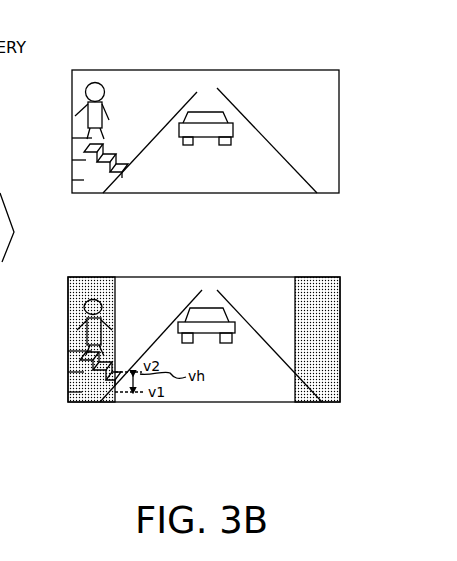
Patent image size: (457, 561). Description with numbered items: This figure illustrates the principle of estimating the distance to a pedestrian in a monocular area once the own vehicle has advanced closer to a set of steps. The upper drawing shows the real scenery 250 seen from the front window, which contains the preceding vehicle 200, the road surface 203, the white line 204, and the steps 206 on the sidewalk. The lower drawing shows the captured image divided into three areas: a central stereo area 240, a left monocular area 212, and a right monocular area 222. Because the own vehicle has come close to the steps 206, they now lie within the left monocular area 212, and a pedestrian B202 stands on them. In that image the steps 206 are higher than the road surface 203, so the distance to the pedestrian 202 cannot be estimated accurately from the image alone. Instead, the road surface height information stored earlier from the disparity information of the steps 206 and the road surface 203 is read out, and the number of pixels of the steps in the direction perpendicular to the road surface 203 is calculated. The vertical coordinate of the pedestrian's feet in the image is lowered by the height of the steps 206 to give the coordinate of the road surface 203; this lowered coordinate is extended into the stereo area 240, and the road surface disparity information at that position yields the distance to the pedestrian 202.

The preceding vehicle 200 is at (212, 140).
The pedestrian B 202 is at (103, 82).
The road surface 203 is at (248, 170).
The white line 204 is at (197, 92).
The steps 206 is at (92, 178).
The left monocular area 212 is at (78, 403).
The right monocular area 222 is at (333, 403).
The stereo area 240 is at (197, 403).
The real scenery 250 is at (217, 70).